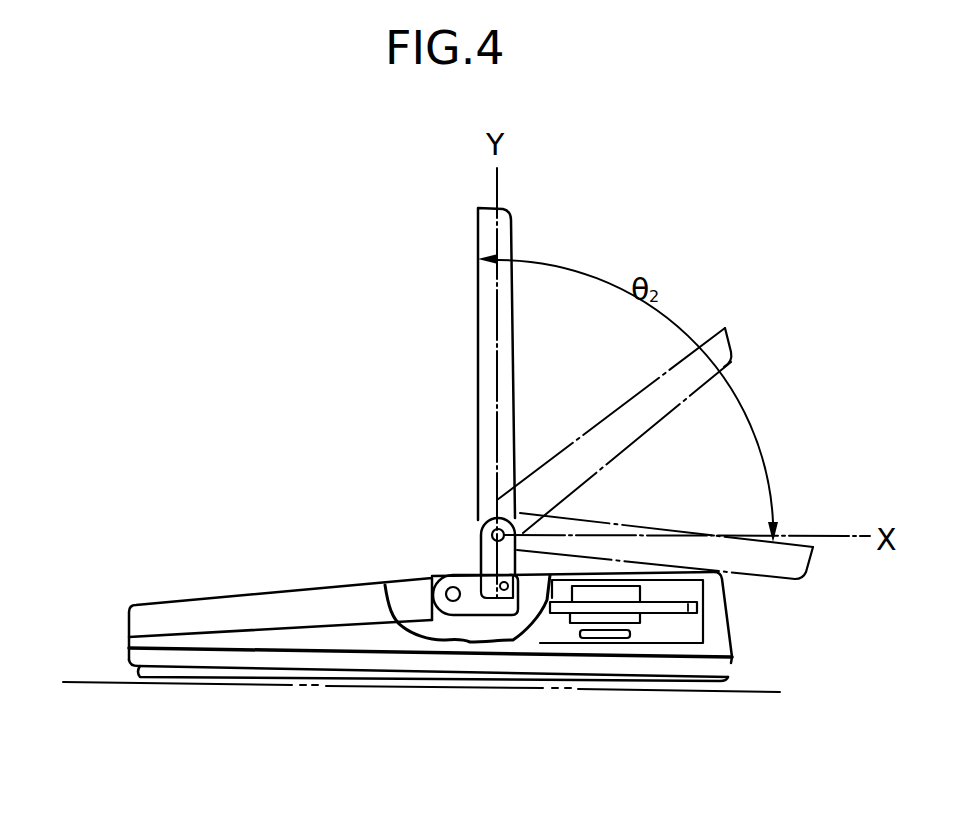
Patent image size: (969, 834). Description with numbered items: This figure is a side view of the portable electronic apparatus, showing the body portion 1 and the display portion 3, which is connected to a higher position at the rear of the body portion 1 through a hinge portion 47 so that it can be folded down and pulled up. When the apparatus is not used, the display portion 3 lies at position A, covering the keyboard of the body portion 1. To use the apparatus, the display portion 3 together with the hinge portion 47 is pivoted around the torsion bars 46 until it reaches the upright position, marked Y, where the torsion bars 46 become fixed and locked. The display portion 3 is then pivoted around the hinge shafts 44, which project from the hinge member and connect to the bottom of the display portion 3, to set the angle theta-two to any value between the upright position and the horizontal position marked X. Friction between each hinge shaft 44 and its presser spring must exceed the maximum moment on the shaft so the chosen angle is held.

The body portion 1 is at (715, 645).
The display portion 3 is at (288, 618).
The hinge shafts 44 is at (491, 531).
The torsion bars 46 is at (496, 579).
The hinge portion 47 is at (472, 598).
The closed position A is at (129, 637).